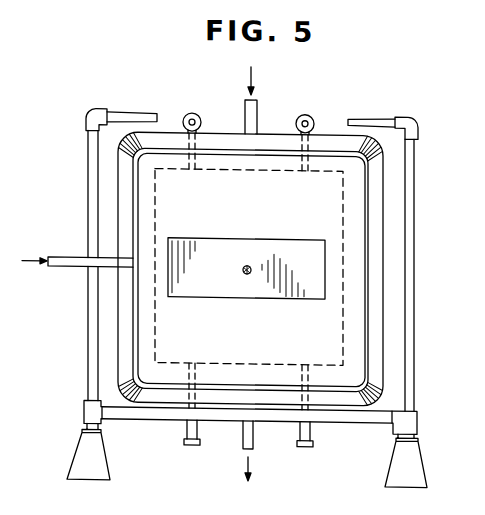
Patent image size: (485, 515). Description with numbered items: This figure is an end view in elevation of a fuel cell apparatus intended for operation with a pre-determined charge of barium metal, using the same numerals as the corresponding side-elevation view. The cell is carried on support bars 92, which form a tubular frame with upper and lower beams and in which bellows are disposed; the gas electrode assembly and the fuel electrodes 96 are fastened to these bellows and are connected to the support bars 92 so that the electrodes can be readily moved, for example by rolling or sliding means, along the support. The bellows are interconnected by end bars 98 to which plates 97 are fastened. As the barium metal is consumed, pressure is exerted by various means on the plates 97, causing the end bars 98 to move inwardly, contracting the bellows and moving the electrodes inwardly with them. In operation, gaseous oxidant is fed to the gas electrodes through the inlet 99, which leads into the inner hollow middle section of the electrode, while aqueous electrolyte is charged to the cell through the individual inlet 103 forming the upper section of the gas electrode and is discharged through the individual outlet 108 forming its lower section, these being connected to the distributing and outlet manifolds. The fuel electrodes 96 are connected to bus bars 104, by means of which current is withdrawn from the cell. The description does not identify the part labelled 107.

The support bars 92 is at (167, 108).
The fuel electrodes 96 is at (153, 200).
The plates 97 is at (263, 238).
The end bars 98 is at (247, 184).
The inlet 99 is at (57, 266).
The inlet 103 is at (258, 104).
The bus bars 104 is at (186, 442).
The support rod 107 is at (197, 130).
The outlet 108 is at (254, 436).